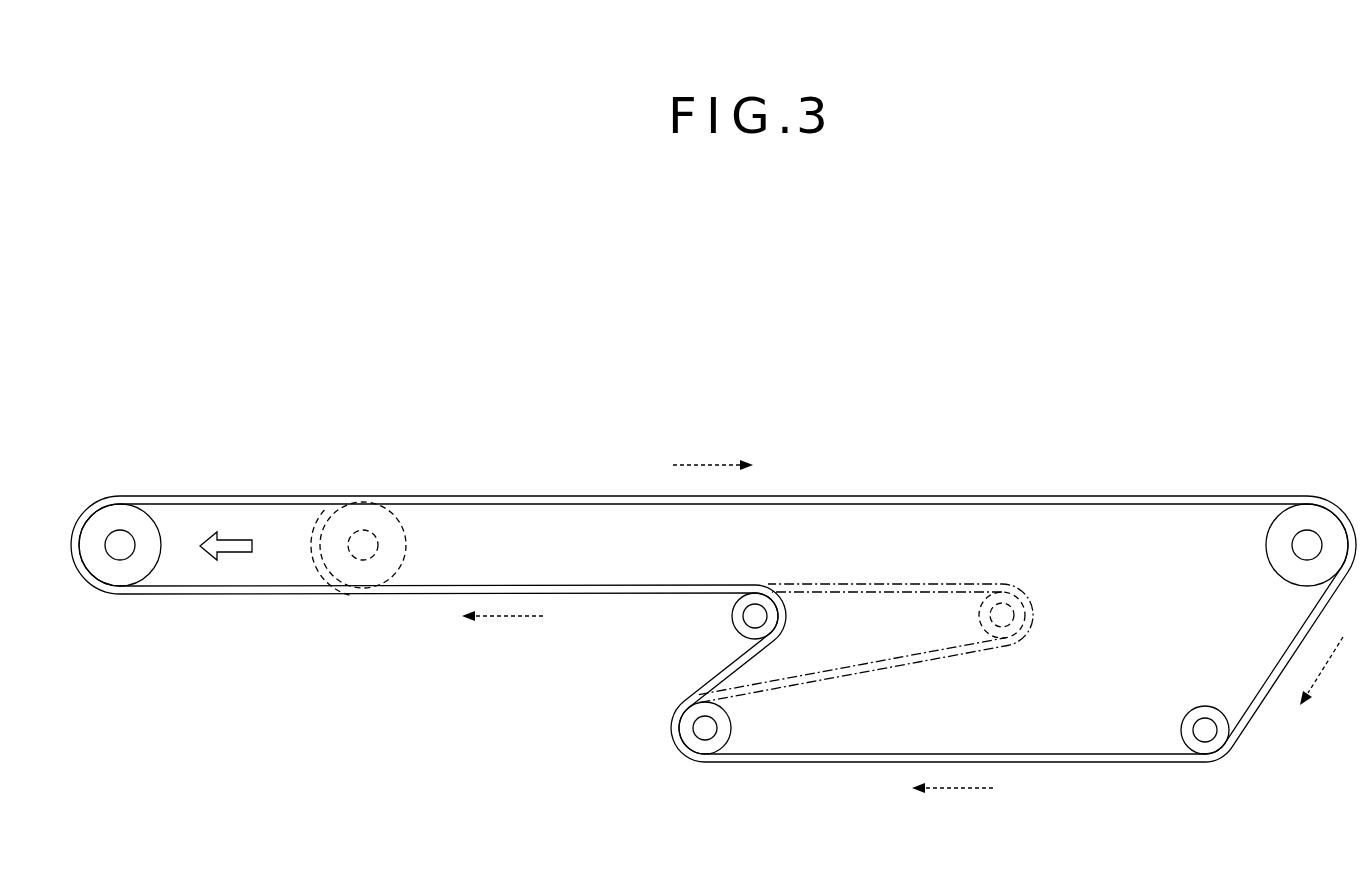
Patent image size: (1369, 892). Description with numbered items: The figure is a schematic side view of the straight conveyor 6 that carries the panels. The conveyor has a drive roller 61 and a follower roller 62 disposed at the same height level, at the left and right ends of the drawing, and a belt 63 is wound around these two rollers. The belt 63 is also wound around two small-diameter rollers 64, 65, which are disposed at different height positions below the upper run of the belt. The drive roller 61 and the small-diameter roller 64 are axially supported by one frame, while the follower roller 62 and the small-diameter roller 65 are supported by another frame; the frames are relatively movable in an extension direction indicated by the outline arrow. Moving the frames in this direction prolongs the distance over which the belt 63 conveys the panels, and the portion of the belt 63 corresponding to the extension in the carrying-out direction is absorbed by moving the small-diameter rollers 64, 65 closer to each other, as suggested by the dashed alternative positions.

The straight conveyor 6 is at (923, 343).
The drive roller 61 is at (120, 517).
The follower roller 62 is at (1312, 517).
The belt 63 is at (1100, 495).
The small-diameter roller 64 is at (735, 619).
The small-diameter roller 65 is at (685, 733).